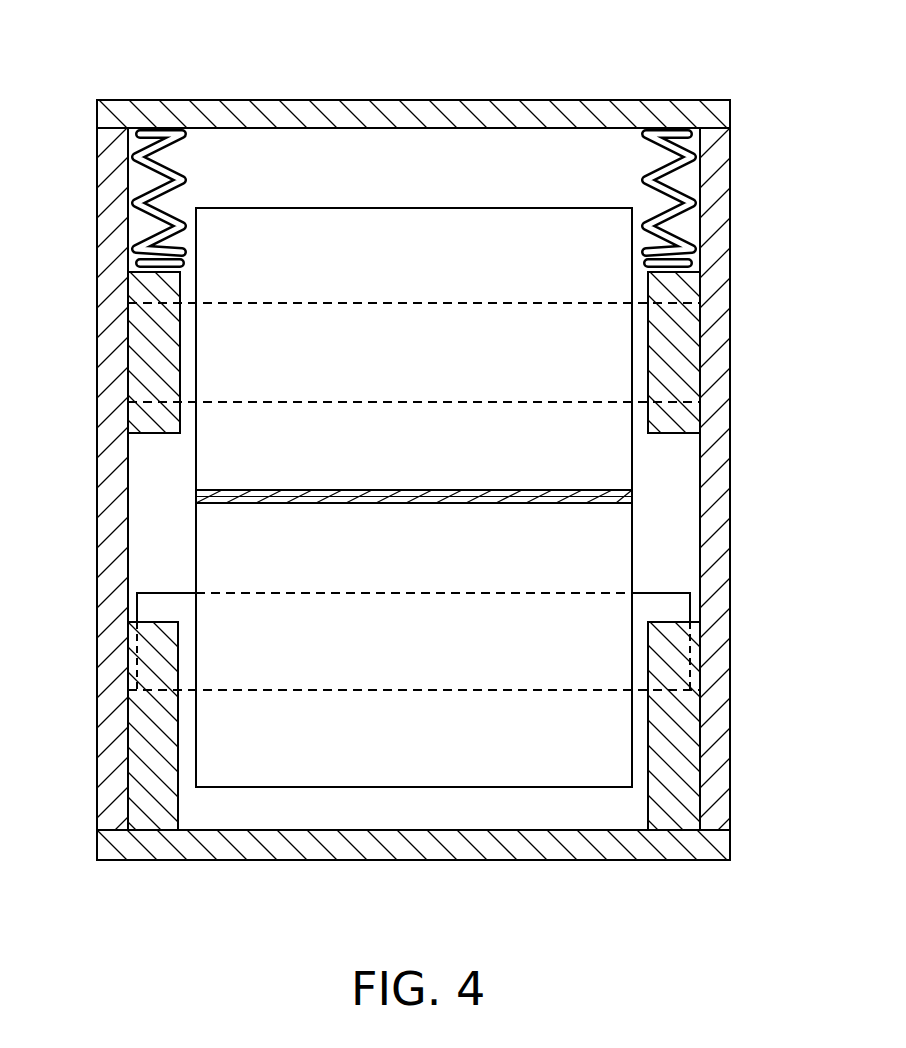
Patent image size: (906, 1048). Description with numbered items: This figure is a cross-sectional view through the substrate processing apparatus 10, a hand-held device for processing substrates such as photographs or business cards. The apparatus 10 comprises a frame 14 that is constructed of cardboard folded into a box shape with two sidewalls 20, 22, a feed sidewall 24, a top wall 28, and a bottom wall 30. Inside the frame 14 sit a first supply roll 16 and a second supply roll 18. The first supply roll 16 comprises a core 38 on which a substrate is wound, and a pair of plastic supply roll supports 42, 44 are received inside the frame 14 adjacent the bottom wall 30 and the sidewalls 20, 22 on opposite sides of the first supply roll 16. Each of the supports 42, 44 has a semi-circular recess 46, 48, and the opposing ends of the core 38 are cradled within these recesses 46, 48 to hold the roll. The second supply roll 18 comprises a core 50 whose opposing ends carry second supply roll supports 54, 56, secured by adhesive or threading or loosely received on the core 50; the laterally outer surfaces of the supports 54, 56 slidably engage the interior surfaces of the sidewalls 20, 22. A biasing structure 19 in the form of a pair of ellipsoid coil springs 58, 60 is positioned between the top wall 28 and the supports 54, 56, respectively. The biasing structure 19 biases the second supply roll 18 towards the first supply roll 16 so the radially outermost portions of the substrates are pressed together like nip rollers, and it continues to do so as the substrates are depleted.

The substrate processing apparatus 10 is at (84, 76).
The frame 14 is at (670, 75).
The first supply roll 16 is at (607, 555).
The second supply roll 18 is at (525, 240).
The biasing structure 19 is at (296, 163).
The sidewall 20 is at (108, 545).
The sidewall 22 is at (722, 450).
The feed sidewall 24 is at (493, 147).
The top wall 28 is at (370, 113).
The bottom wall 30 is at (363, 848).
The core 38 is at (378, 615).
The supply roll support 42 is at (140, 752).
The supply roll support 44 is at (680, 738).
The semi-circular recess 46 is at (152, 693).
The semi-circular recess 48 is at (672, 693).
The core 50 is at (306, 330).
The second supply roll support 54 is at (140, 350).
The second supply roll support 56 is at (686, 352).
The ellipsoid coil spring 58 is at (190, 155).
The ellipsoid coil spring 60 is at (643, 178).